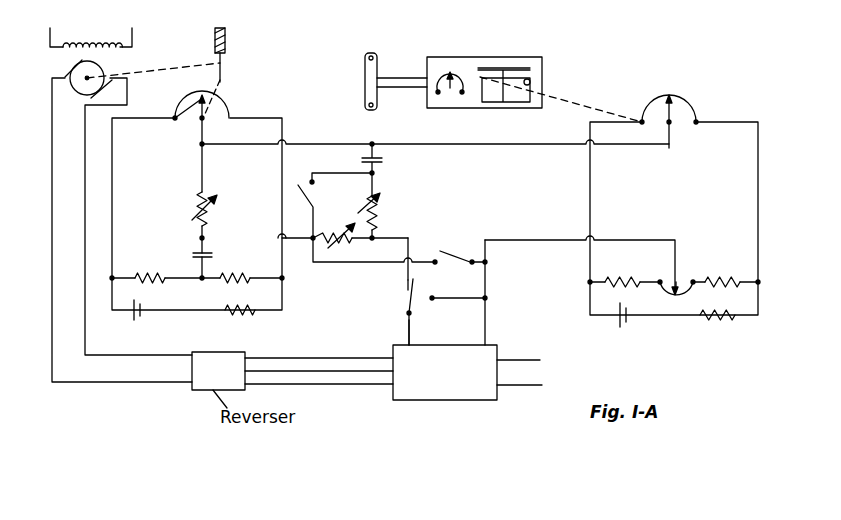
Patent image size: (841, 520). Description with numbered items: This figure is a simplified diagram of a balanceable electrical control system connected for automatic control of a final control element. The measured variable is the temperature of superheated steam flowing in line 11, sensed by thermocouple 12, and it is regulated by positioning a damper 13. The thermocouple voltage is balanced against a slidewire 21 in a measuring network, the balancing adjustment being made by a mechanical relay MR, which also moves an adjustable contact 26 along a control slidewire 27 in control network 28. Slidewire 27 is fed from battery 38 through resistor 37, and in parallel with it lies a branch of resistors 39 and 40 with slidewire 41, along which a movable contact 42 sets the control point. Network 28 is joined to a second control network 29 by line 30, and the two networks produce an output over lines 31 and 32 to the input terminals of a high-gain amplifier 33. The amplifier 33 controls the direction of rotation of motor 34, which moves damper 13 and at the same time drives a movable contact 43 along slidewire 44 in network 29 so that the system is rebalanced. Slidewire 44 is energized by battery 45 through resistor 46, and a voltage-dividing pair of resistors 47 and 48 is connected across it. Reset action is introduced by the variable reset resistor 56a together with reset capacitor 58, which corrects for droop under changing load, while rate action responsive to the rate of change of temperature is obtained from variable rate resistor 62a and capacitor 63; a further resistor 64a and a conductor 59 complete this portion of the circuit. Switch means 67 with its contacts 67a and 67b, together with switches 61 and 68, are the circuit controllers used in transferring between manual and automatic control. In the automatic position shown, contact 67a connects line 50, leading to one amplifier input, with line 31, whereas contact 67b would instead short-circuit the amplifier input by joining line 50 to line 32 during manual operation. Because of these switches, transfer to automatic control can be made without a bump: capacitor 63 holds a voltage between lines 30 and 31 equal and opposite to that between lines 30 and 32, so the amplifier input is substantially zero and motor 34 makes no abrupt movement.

The line 11 is at (365, 70).
The thermocouple 12 is at (377, 78).
The damper 13 is at (222, 78).
The slidewire 21 is at (460, 67).
The mechanical relay MR is at (545, 73).
The adjustable circuit element 26 is at (672, 115).
The control slidewire 27 is at (695, 112).
The control network 28 is at (674, 218).
The second control network 29 is at (197, 214).
The line 30 is at (462, 148).
The line 31 is at (392, 240).
The line 32 is at (555, 243).
The amplifier 33 is at (467, 320).
The motor 34 is at (101, 73).
The resistor 37 is at (720, 304).
The battery 38 is at (628, 310).
The resistor 39 is at (725, 278).
The resistor 40 is at (627, 278).
The slidewire 41 is at (680, 290).
The movable contact 42 is at (676, 285).
The movable contact 43 is at (184, 119).
The slidewire 44 is at (228, 103).
The battery 45 is at (140, 317).
The resistor 46 is at (237, 318).
The resistor 47 is at (230, 272).
The resistor 48 is at (150, 273).
The line 50 is at (408, 330).
The variable resistor 56a is at (205, 220).
The reset capacitor 58 is at (193, 249).
The conductor 59 is at (313, 262).
The switch 61 is at (452, 247).
The variable resistor 62a is at (348, 240).
The capacitor 63 is at (382, 160).
The variable resistor 64a is at (383, 207).
The switch means 67 is at (413, 305).
The contact 67a is at (408, 287).
The contact 67b is at (458, 286).
The switch 68 is at (314, 192).